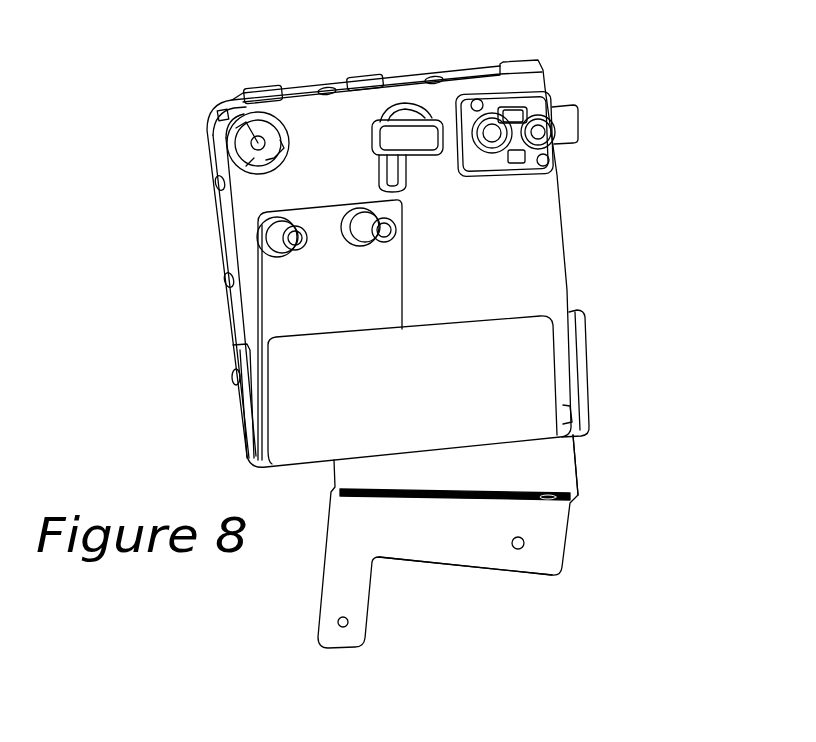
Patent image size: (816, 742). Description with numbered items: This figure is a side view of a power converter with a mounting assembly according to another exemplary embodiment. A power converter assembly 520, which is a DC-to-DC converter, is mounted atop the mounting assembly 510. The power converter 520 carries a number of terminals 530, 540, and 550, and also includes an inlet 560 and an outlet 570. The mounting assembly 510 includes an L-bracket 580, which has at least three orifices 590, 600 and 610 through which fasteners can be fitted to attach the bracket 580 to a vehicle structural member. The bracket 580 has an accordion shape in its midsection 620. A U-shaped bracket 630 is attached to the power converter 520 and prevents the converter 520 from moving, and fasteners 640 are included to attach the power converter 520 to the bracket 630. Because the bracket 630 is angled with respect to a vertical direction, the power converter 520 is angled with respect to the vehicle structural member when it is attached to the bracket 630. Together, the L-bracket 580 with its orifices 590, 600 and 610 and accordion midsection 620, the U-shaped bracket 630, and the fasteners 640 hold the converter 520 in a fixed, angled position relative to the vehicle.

The mounting assembly 510 is at (613, 540).
The power converter assembly 520 is at (596, 174).
The terminal 530 is at (232, 107).
The terminal 540 is at (438, 120).
The terminal 550 is at (550, 103).
The inlet 560 is at (327, 266).
The outlet 570 is at (390, 243).
The L-bracket 580 is at (430, 557).
The orifice 590 is at (338, 625).
The orifice 600 is at (524, 545).
The orifice 610 is at (553, 501).
The midsection 620 is at (567, 463).
The U-shaped bracket 630 is at (587, 397).
The fasteners 640 is at (231, 385).